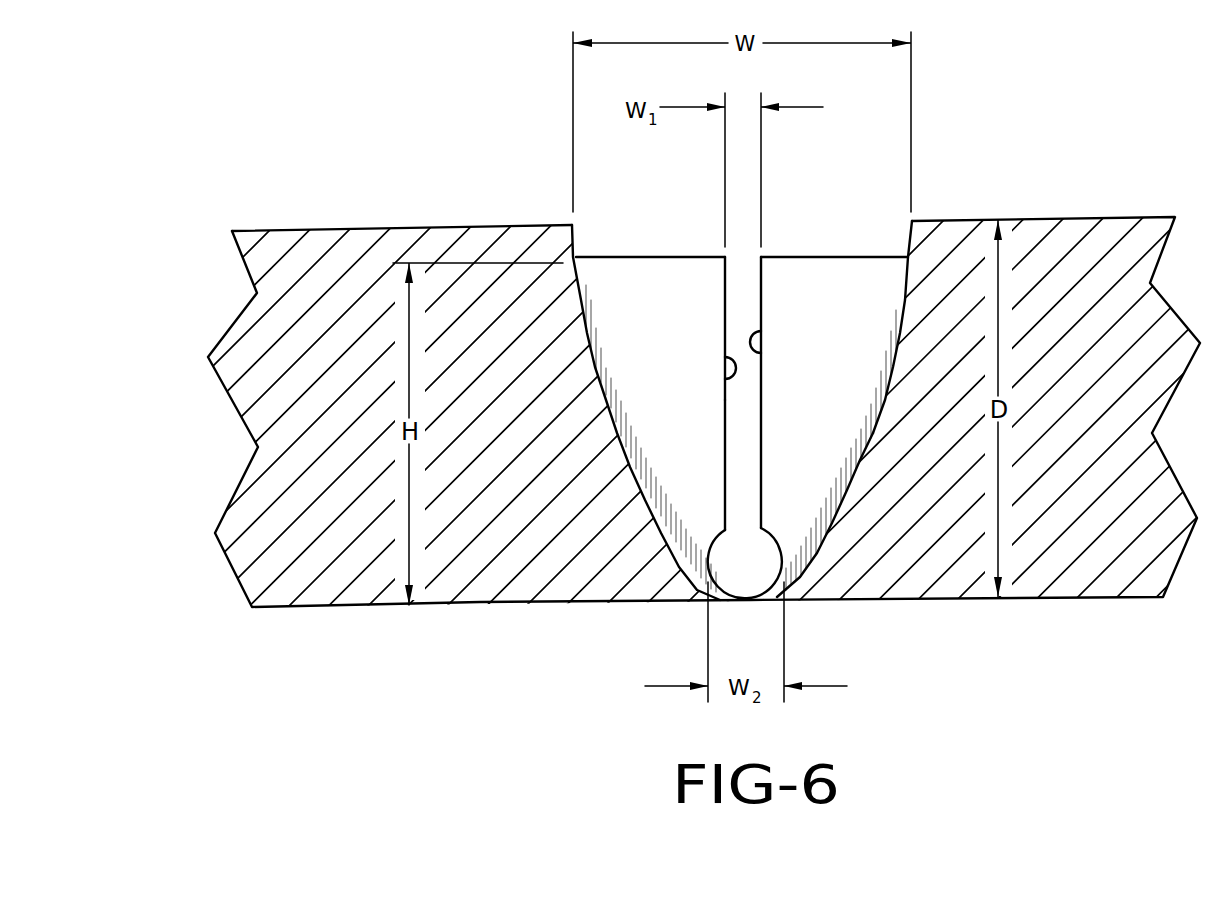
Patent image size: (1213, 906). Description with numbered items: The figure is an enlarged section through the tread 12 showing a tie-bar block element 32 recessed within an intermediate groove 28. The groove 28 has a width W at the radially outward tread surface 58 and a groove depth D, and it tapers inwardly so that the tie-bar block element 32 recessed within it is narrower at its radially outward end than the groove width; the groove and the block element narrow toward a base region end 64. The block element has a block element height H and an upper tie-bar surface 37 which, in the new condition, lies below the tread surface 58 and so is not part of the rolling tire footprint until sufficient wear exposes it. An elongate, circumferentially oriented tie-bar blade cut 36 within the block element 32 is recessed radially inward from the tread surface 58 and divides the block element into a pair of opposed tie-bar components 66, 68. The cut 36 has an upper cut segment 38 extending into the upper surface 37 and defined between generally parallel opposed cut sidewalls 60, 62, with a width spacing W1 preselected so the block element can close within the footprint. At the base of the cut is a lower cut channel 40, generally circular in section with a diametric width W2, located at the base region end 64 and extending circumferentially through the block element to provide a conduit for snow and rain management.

The tread 12 is at (440, 213).
The radially outward tread surface 58 is at (283, 230).
The tie-bar component 68 is at (617, 287).
The upper tie-bar surface 37 is at (793, 256).
The tie-bar component 66 is at (883, 272).
The tie-bar block element 32 is at (823, 278).
The upper cut segment 38 is at (743, 277).
The tie-bar blade cut 36 is at (745, 468).
The cut sidewall 62 is at (733, 378).
The cut sidewall 60 is at (763, 352).
The intermediate groove 28 is at (851, 478).
The lower cut channel 40 is at (722, 596).
The base region end 64 is at (732, 589).